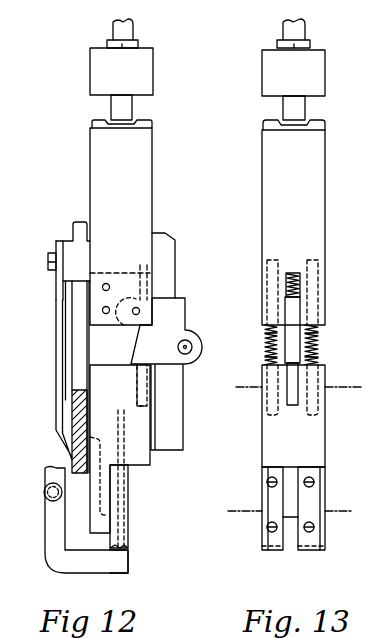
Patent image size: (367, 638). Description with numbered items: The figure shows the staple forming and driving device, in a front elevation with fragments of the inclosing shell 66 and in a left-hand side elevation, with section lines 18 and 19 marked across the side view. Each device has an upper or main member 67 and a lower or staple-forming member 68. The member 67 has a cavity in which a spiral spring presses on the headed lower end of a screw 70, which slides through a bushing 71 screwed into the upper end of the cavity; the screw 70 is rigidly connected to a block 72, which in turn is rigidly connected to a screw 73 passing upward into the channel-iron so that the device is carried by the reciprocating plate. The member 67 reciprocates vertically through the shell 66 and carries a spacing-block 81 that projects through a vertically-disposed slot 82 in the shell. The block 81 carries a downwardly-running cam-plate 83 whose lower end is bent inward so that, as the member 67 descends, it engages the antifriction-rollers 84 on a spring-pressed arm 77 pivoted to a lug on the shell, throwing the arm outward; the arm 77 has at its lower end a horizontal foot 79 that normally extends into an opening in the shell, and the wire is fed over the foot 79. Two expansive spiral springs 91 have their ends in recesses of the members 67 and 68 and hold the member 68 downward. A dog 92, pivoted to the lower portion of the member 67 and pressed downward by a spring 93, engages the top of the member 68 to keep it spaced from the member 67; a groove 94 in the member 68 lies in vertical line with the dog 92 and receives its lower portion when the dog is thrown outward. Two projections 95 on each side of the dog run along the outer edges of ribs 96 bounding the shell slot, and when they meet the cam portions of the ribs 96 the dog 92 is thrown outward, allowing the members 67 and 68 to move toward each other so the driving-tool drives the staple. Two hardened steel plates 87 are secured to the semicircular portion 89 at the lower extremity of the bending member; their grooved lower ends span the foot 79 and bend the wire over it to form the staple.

In FIG. 12, the screw 73 is at (126, 30).
In FIG. 13, the screw 73 is at (295, 31).
In FIG. 12, the block 72 is at (143, 78).
In FIG. 13, the block 72 is at (318, 78).
In FIG. 12, the screw 70 is at (128, 110).
In FIG. 13, the screw 70 is at (300, 110).
In FIG. 12, the bushing 71 is at (148, 128).
In FIG. 13, the bushing 71 is at (318, 127).
In FIG. 12, the upper or main member 67 is at (132, 226).
In FIG. 13, the upper or main member 67 is at (293, 227).
In FIG. 12, the spacing-block 81 is at (73, 247).
In FIG. 12, the slot 82 is at (72, 305).
In FIG. 12, the cam-plate 83 is at (62, 346).
In FIG. 12, the shell 66 is at (72, 408).
In FIG. 13, the shell 66 is at (360, 435).
In FIG. 12, the lower or staple-forming member 68 is at (120, 449).
In FIG. 13, the lower or staple-forming member 68 is at (293, 416).
In FIG. 12, the hardened steel plate 87 is at (120, 505).
In FIG. 13, the hardened steel plate 87 is at (293, 508).
In FIG. 12, the semicircular portion 89 is at (100, 520).
In FIG. 13, the semicircular portion 89 is at (363, 529).
In FIG. 12, the dog 92 is at (166, 331).
In FIG. 13, the dog 92 is at (298, 311).
In FIG. 13, the spring 93 is at (300, 288).
In FIG. 13, the expansive spiral spring 91 is at (280, 350).
In FIG. 12, the groove 94 is at (148, 399).
In FIG. 13, the groove 94 is at (292, 392).
In FIG. 12, the projection 95 is at (193, 345).
In FIG. 13, the projection 95 is at (272, 358).
In FIG. 12, the rib 96 is at (178, 436).
In FIG. 12, the antifriction-roller 84 is at (44, 492).
In FIG. 12, the arm 77 is at (53, 528).
In FIG. 13, the arm 77 is at (360, 466).
In FIG. 12, the foot 79 is at (118, 563).
In FIG. 13, the axis line 19 is at (291, 387).
In FIG. 13, the axis line 18 is at (285, 511).